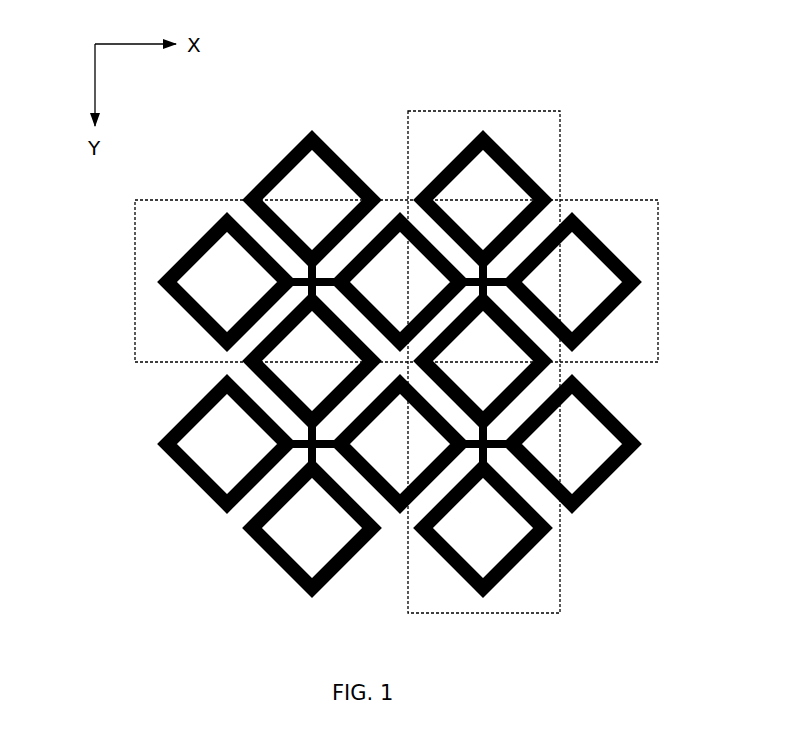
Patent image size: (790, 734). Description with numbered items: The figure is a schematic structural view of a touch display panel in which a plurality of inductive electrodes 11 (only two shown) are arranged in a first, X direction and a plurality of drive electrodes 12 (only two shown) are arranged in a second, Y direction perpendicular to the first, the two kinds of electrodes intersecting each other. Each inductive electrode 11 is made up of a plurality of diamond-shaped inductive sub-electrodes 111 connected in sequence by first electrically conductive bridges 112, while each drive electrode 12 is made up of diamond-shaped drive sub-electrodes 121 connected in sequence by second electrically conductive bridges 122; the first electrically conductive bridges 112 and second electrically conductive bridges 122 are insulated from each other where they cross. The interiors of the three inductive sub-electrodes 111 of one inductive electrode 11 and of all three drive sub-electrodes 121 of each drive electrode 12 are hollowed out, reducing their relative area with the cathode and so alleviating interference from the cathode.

The inductive electrode 11 is at (558, 313).
The inductive sub-electrode 111 is at (508, 157).
The first electrically conductive bridge 112 is at (486, 268).
The drive electrode 12 is at (384, 345).
The drive sub-electrode 121 is at (642, 282).
The second electrically conductive bridge 122 is at (496, 284).